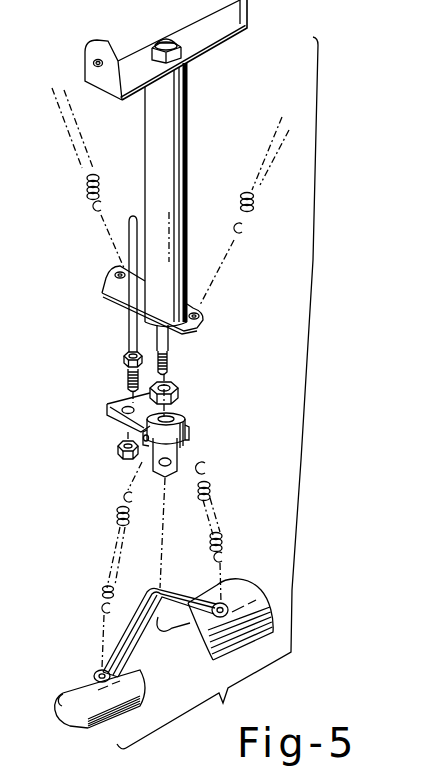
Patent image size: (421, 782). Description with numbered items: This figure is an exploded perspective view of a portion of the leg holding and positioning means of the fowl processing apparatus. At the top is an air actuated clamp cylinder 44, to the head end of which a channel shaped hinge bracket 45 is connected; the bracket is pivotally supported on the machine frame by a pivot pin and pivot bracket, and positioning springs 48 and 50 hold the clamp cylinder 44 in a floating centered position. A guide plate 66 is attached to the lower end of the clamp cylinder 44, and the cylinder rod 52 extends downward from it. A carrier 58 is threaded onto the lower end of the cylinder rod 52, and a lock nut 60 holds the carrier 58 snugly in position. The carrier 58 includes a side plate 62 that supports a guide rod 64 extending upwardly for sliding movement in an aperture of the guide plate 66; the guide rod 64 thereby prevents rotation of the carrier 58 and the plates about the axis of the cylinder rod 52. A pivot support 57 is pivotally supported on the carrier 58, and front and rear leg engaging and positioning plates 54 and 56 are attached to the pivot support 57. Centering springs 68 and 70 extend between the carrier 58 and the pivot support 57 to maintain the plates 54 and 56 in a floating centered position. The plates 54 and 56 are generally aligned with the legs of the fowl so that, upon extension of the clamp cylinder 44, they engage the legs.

The clamp cylinder 44 is at (185, 153).
The hinge bracket 45 is at (219, 42).
The positioning spring 48 is at (255, 204).
The positioning spring 50 is at (86, 183).
The cylinder rod 52 is at (170, 337).
The front leg engaging and positioning plate 54 is at (80, 680).
The rear leg engaging and positioning plate 56 is at (235, 581).
The pivot support 57 is at (146, 649).
The carrier 58 is at (183, 438).
The lock nut 60 is at (180, 394).
The side plate 62 is at (107, 416).
The guide rod 64 is at (130, 337).
The guide plate 66 is at (116, 306).
The centering spring 68 is at (118, 525).
The centering spring 70 is at (211, 491).